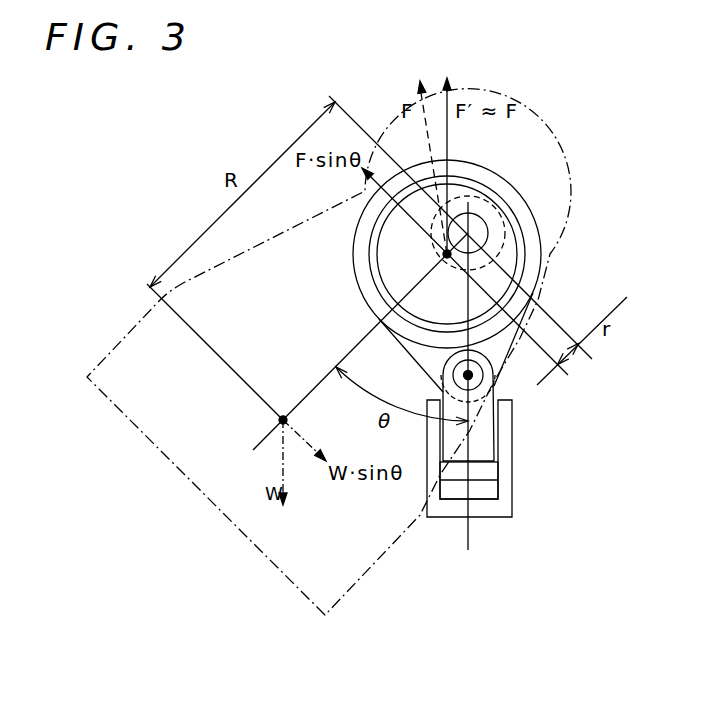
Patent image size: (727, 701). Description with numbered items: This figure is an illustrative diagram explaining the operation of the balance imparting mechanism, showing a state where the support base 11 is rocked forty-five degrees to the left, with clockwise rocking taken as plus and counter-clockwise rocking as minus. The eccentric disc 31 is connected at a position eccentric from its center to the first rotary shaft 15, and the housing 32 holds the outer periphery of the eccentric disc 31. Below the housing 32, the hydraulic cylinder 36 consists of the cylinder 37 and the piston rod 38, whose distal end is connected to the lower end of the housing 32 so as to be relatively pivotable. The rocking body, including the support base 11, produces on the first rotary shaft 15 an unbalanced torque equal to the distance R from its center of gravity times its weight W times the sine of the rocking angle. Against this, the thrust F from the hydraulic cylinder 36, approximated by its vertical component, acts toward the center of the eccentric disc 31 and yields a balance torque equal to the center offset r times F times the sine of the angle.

The support base 11 is at (172, 460).
The first rotary shaft 15 is at (468, 233).
The eccentric disc 31 is at (510, 260).
The housing 32 is at (538, 238).
The hydraulic cylinder 36 is at (516, 473).
The cylinder 37 is at (503, 505).
The piston rod 38 is at (488, 432).